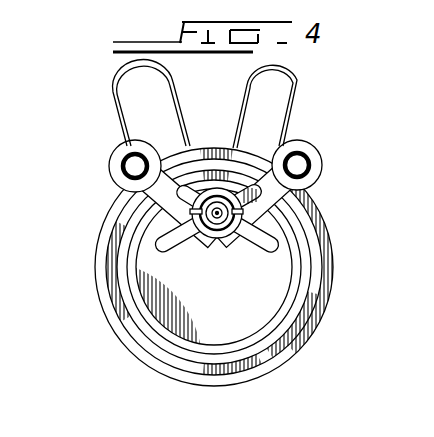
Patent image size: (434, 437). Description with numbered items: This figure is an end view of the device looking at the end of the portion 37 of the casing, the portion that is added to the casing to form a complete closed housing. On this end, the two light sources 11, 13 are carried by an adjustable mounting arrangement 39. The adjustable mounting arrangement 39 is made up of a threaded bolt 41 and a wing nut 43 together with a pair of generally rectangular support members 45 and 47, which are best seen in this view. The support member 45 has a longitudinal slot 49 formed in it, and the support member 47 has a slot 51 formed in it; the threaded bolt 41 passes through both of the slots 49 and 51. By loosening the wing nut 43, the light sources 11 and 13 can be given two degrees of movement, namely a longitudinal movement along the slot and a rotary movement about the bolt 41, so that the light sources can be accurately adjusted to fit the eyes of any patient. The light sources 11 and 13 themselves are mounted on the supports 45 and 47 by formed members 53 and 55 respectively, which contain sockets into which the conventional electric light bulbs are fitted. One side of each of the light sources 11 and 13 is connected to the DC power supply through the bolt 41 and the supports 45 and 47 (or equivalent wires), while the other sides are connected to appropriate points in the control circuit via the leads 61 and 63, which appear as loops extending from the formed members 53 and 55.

The light source 11 is at (310, 163).
The light source 13 is at (130, 165).
The portion 37 is at (223, 340).
The adjustable mounting arrangement 39 is at (224, 262).
The threaded bolt 41 is at (218, 205).
The wing nut 43 is at (235, 246).
The support member 45 is at (143, 250).
The support member 47 is at (305, 243).
The longitudinal slot 49 is at (184, 258).
The slot 51 is at (298, 220).
The formed member 53 is at (322, 175).
The formed member 55 is at (105, 184).
The lead 61 is at (296, 97).
The lead 63 is at (115, 92).